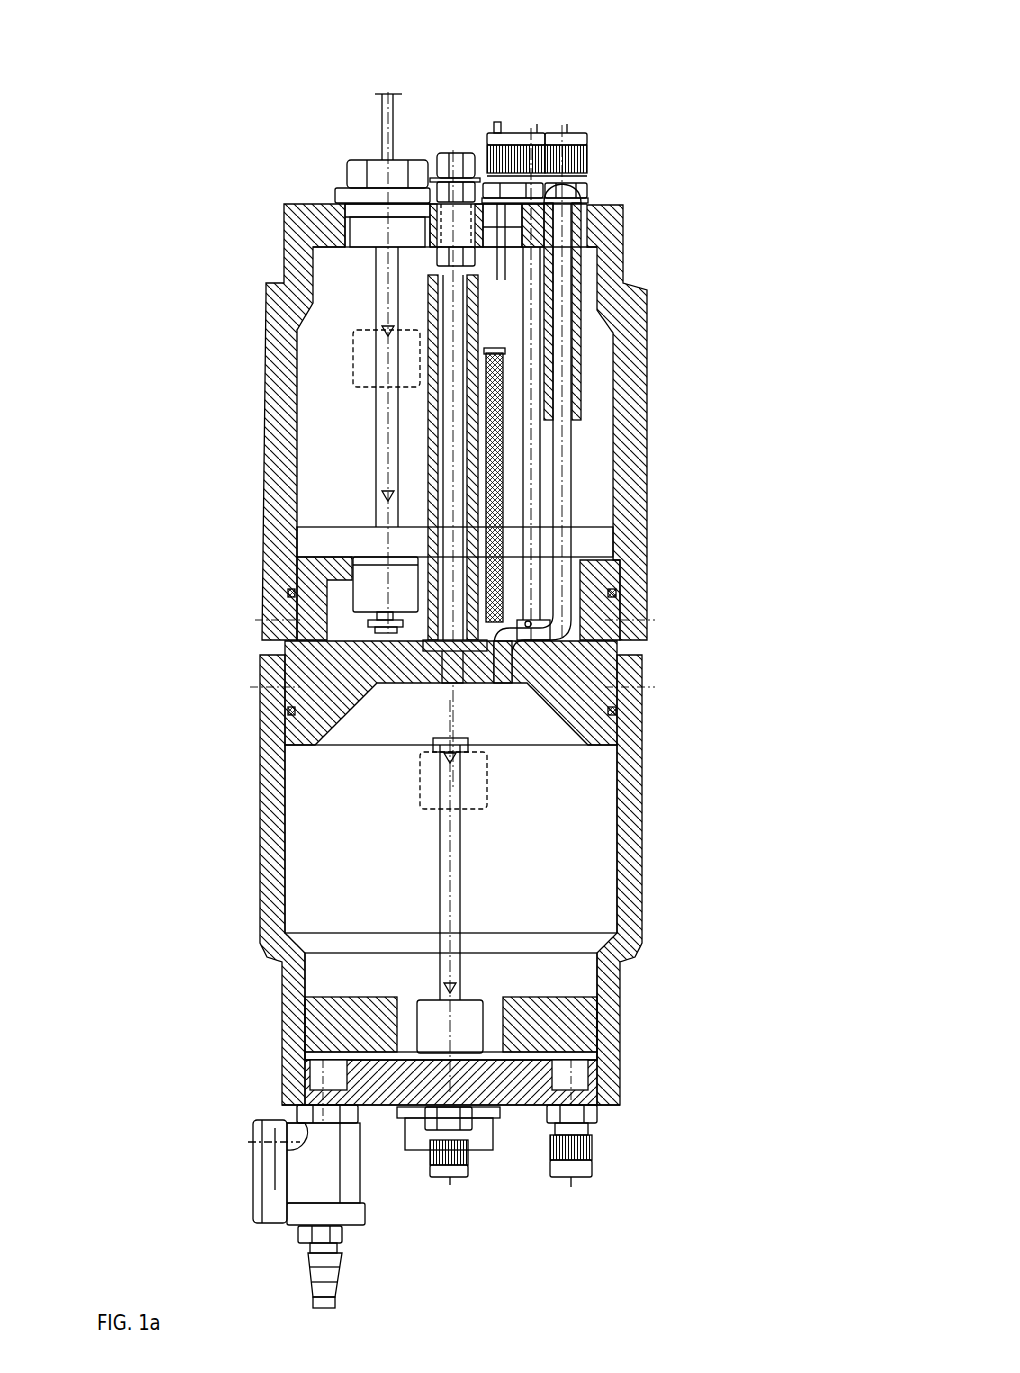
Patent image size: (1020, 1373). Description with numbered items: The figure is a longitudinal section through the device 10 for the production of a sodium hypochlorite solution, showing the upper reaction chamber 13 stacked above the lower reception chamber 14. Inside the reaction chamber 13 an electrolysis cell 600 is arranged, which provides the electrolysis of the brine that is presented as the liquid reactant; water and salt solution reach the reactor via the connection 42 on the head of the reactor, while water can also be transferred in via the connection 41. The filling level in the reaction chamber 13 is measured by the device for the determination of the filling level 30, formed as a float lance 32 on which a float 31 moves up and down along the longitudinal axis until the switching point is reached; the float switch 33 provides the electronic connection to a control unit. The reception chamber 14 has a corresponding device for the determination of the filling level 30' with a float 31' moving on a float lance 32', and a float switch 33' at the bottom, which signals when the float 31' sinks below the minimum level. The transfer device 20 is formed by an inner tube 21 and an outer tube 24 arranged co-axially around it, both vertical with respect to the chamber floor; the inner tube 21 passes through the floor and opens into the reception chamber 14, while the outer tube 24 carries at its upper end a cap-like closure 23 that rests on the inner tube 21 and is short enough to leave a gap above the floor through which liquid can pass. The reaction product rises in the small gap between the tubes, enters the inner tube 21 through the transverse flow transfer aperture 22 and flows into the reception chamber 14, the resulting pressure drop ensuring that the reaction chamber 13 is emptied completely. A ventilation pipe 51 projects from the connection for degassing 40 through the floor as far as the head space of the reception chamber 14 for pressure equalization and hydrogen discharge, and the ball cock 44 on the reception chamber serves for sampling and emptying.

The device 10 is at (654, 362).
The reaction chamber 13 is at (335, 428).
The reception chamber 14 is at (578, 795).
The transfer device 20 is at (482, 569).
The inner tube 21 is at (465, 402).
The flow transfer aperture 22 is at (438, 303).
The closure 23 is at (442, 318).
The outer tube 24 is at (482, 340).
The device for the determination of the filling level 30 is at (258, 358).
The device for the determination of the filling level 30' is at (266, 769).
The float 31 is at (224, 589).
The float 31' is at (265, 1010).
The float lance 32 is at (236, 362).
The float lance 32' is at (267, 897).
The float switch 33 is at (343, 123).
The float switch 33' is at (631, 1123).
The connection for degassing 40 is at (546, 140).
The connection for gas equilibration 41 is at (580, 133).
The connection for dosing of water or salt solution 42 is at (497, 122).
The ball cock 44 is at (327, 1182).
The ventilation pipe 51 is at (558, 545).
The electrolysis cell 600 is at (514, 475).